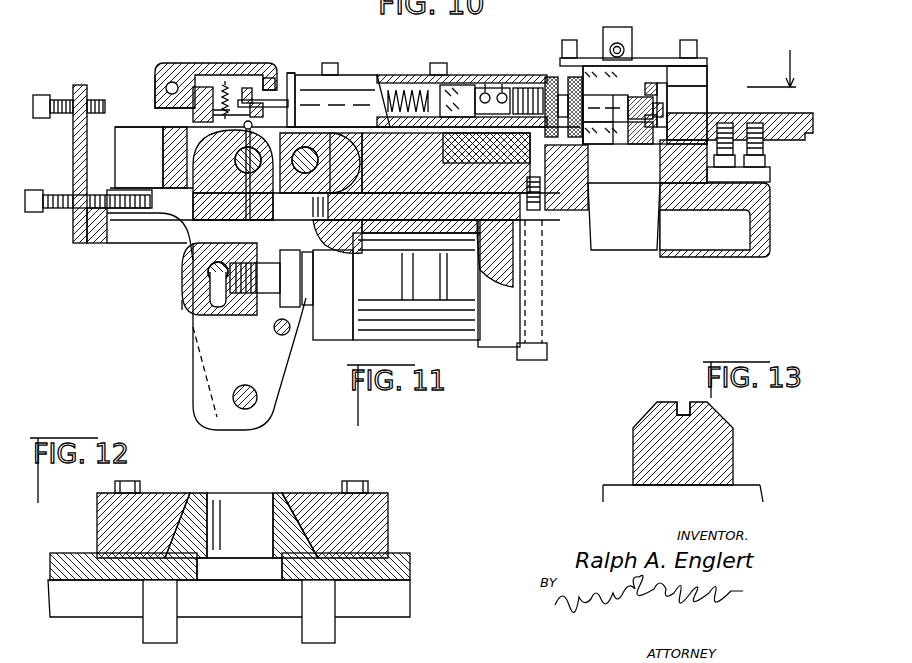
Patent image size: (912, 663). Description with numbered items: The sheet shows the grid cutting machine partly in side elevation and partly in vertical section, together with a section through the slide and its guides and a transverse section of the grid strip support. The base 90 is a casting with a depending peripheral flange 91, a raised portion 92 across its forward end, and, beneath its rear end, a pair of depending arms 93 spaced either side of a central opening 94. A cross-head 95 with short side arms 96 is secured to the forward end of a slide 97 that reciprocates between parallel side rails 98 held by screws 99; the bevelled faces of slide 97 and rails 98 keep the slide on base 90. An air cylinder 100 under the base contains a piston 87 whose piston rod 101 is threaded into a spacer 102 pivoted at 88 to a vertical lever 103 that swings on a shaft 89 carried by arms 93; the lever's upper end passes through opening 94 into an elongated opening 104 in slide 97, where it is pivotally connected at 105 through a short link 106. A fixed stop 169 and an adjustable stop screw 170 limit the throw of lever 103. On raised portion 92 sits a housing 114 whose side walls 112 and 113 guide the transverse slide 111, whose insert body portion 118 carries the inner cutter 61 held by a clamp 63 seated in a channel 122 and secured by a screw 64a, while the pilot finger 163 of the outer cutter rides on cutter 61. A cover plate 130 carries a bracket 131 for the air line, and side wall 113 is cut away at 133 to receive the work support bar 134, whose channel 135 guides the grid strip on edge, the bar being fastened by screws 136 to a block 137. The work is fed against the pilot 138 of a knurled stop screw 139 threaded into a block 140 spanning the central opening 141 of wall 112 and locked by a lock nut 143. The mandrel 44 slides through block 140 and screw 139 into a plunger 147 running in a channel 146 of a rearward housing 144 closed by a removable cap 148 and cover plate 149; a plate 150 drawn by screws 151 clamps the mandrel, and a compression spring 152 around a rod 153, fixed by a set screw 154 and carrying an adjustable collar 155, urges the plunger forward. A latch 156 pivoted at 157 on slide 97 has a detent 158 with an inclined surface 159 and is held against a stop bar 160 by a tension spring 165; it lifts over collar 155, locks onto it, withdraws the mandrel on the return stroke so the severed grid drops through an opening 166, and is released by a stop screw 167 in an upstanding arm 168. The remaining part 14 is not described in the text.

In FIG. 11, the pin 14 is at (281, 100).
In FIG. 11, the mandrel 44 is at (622, 108).
In FIG. 11, the inner cutter 61 is at (632, 118).
In FIG. 11, the clamp 63 is at (648, 132).
In FIG. 11, the screw 64a is at (660, 117).
In FIG. 11, the piston 87 is at (462, 278).
In FIG. 11, the pivotal connection 88 is at (190, 298).
In FIG. 11, the shaft 89 is at (258, 405).
In FIG. 11, the base 90 is at (106, 190).
In FIG. 12, the base 90 is at (75, 553).
In FIG. 11, the depending peripheral flange 91 is at (115, 245).
In FIG. 12, the depending peripheral flange 91 is at (97, 605).
In FIG. 11, the raised portion 92 is at (771, 196).
In FIG. 11, the depending arms 93 is at (292, 348).
In FIG. 12, the depending arms 93 is at (302, 630).
In FIG. 11, the centrally disposed opening 94 is at (312, 212).
In FIG. 12, the centrally disposed opening 94 is at (252, 578).
In FIG. 11, the cross-head 95 is at (470, 140).
In FIG. 11, the side arms 96 is at (528, 208).
In FIG. 11, the slide 97 is at (366, 186).
In FIG. 12, the slide 97 is at (283, 498).
In FIG. 11, the side rails 98 is at (120, 140).
In FIG. 12, the side rails 98 is at (165, 503).
In FIG. 12, the screws 99 is at (360, 482).
In FIG. 11, the air cylinder 100 is at (463, 340).
In FIG. 11, the piston rod 101 is at (387, 272).
In FIG. 11, the spacer 102 is at (220, 316).
In FIG. 11, the lever 103 is at (177, 262).
In FIG. 11, the elongated opening 104 is at (170, 145).
In FIG. 12, the elongated opening 104 is at (230, 503).
In FIG. 11, the pivotal connection 105 is at (318, 160).
In FIG. 11, the short link 106 is at (315, 147).
In FIG. 11, the slide 111 is at (652, 124).
In FIG. 11, the side wall 112 is at (562, 95).
In FIG. 11, the side wall 113 is at (707, 84).
In FIG. 11, the housing 114 is at (692, 216).
In FIG. 11, the body portion 118 is at (625, 100).
In FIG. 11, the channel 122 is at (652, 97).
In FIG. 11, the cover plate 130 is at (700, 60).
In FIG. 11, the bracket 131 is at (619, 36).
In FIG. 11, the cut-away portion 133 is at (705, 86).
In FIG. 11, the bar 134 is at (772, 142).
In FIG. 13, the bar 134 is at (735, 458).
In FIG. 11, the channel 135 is at (778, 120).
In FIG. 13, the channel 135 is at (683, 402).
In FIG. 11, the screws 136 is at (790, 120).
In FIG. 11, the block 137 is at (768, 168).
In FIG. 13, the block 137 is at (603, 492).
In FIG. 11, the pilot 138 is at (605, 132).
In FIG. 11, the adjustable stop screw 139 is at (575, 77).
In FIG. 11, the block 140 is at (528, 88).
In FIG. 11, the central opening 141 is at (565, 42).
In FIG. 11, the lock nut 143 is at (550, 77).
In FIG. 11, the housing 144 is at (355, 95).
In FIG. 11, the channel 146 is at (405, 92).
In FIG. 11, the plunger 147 is at (487, 93).
In FIG. 11, the removable cap 148 is at (288, 80).
In FIG. 11, the removable cover plate 149 is at (335, 62).
In FIG. 11, the plate 150 is at (503, 92).
In FIG. 11, the screws 151 is at (492, 86).
In FIG. 11, the coiled compression spring 152 is at (396, 75).
In FIG. 11, the rod 153 is at (247, 88).
In FIG. 11, the set screw 154 is at (455, 88).
In FIG. 11, the collar 155 is at (268, 95).
In FIG. 11, the latch 156 is at (187, 63).
In FIG. 11, the pivot 157 is at (158, 80).
In FIG. 11, the detent 158 is at (272, 78).
In FIG. 11, the inclined surface 159 is at (292, 73).
In FIG. 11, the stop bar 160 is at (210, 87).
In FIG. 11, the pilot finger 163 is at (690, 66).
In FIG. 11, the tension spring 165 is at (226, 82).
In FIG. 11, the opening 166 is at (648, 190).
In FIG. 11, the adjustable stop screw 167 is at (50, 98).
In FIG. 11, the arm 168 is at (82, 90).
In FIG. 11, the fixed stop 169 is at (275, 334).
In FIG. 11, the adjustable stop screw 170 is at (55, 214).